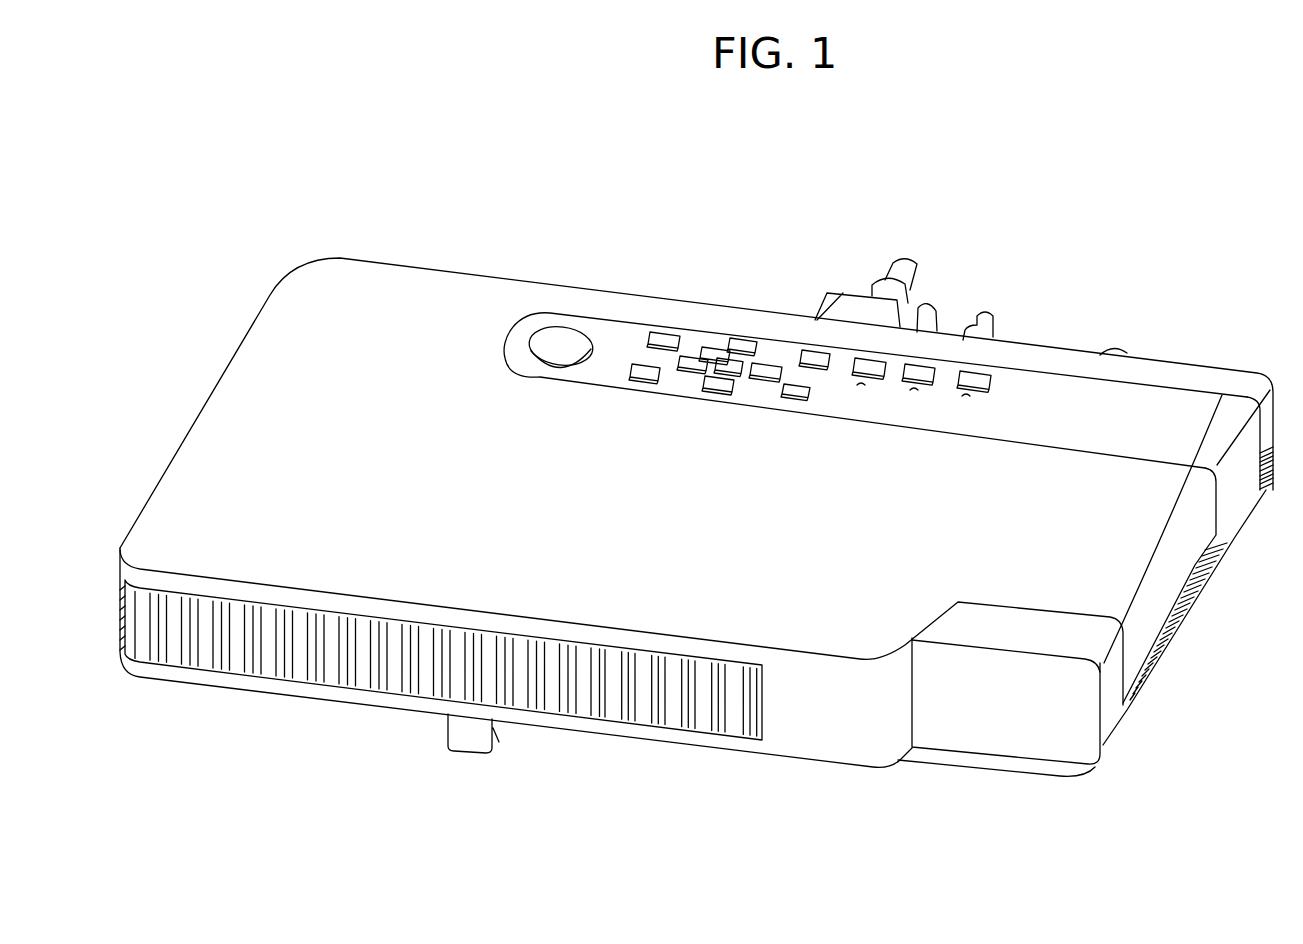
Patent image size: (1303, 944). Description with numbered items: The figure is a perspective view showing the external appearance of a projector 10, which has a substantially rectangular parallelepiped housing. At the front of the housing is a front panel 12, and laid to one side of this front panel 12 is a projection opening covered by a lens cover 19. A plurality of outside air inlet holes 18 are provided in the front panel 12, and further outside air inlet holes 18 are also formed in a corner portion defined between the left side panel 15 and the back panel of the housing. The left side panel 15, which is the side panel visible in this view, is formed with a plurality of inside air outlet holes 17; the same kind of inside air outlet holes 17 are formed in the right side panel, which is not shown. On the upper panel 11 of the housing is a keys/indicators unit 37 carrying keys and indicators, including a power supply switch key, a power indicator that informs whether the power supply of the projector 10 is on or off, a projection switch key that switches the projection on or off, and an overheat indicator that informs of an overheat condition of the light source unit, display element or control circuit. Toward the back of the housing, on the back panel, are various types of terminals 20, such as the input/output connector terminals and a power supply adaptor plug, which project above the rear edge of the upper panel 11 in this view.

The projector 10 is at (658, 215).
The upper panel 11 is at (468, 290).
The front panel 12 is at (805, 723).
The left side panel 15 is at (1175, 572).
The inside air outlet holes 17 is at (1162, 648).
The outside air inlet holes 18 is at (692, 737).
The lens cover 19 is at (1047, 733).
The terminals 20 is at (947, 254).
The keys/indicators unit 37 is at (744, 294).